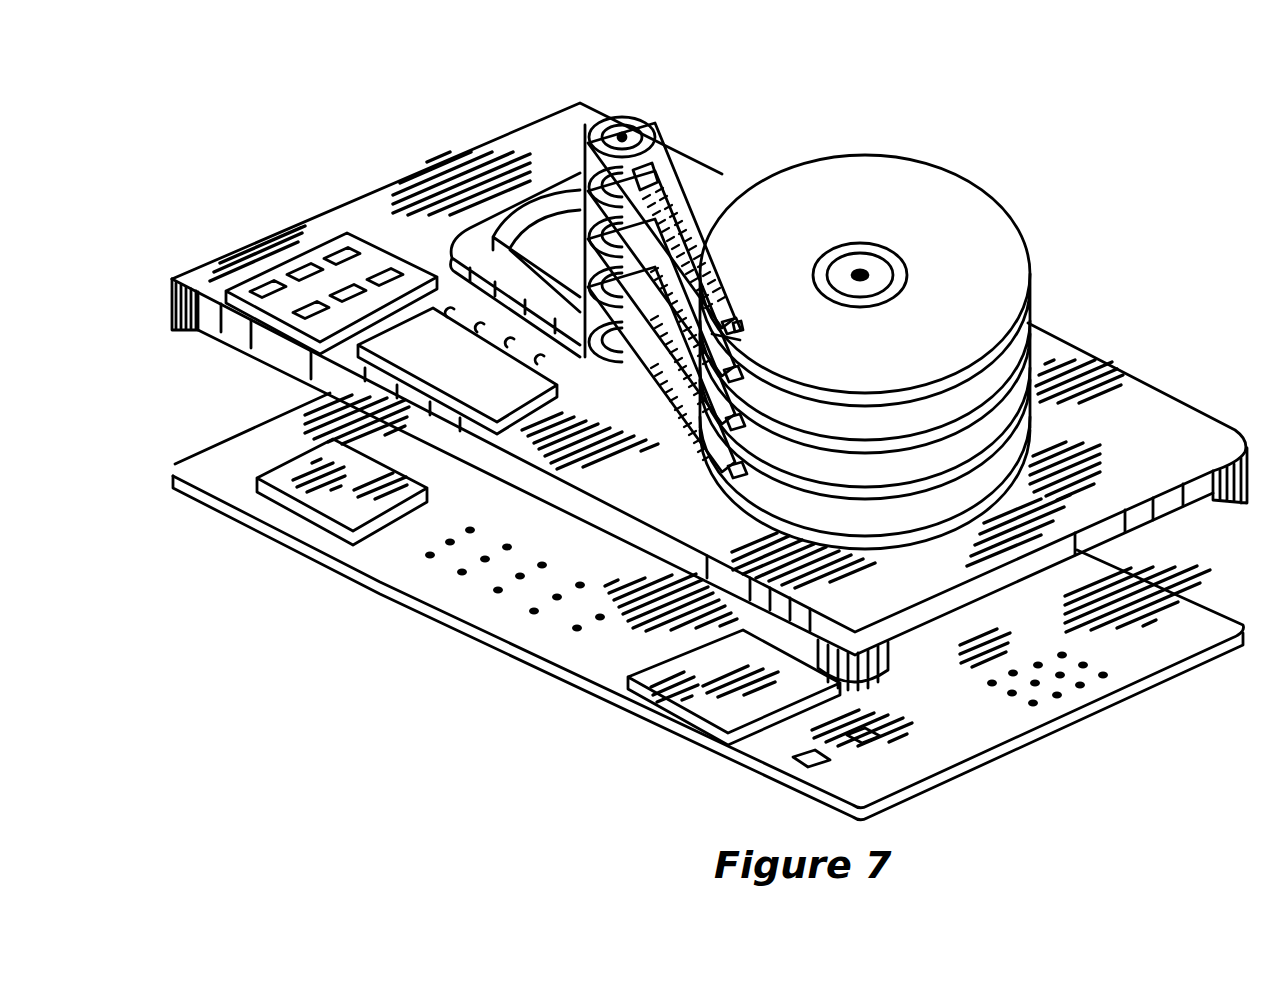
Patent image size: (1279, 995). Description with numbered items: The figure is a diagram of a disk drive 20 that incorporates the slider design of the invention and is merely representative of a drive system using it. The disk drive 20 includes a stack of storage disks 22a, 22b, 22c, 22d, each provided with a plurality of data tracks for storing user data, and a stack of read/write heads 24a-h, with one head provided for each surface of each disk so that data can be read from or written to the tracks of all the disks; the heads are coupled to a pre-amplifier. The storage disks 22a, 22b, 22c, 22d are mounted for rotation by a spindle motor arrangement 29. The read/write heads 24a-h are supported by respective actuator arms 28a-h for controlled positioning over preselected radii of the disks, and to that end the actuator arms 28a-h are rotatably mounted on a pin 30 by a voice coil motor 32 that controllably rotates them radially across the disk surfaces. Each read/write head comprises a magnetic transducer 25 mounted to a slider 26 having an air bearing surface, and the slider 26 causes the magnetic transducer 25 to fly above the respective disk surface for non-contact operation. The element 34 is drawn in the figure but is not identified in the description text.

The disk drive 20 is at (312, 158).
The storage disk 22a is at (1008, 215).
The storage disk 22b is at (1030, 323).
The storage disk 22c is at (1033, 372).
The storage disk 22d is at (1030, 428).
The read/write heads 24a-h is at (737, 317).
The magnetic transducer 25 is at (740, 340).
The slider 26 is at (742, 327).
The actuator arms 28a-h is at (688, 208).
The spindle motor arrangement 29 is at (866, 268).
The pin 30 is at (623, 128).
The voice coil motor 32 is at (475, 235).
The printed circuit board 34 is at (977, 732).